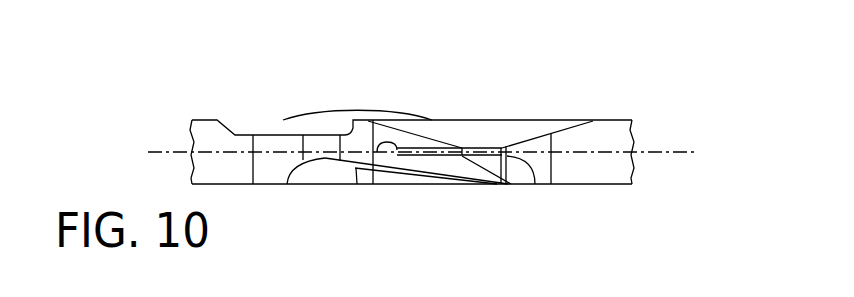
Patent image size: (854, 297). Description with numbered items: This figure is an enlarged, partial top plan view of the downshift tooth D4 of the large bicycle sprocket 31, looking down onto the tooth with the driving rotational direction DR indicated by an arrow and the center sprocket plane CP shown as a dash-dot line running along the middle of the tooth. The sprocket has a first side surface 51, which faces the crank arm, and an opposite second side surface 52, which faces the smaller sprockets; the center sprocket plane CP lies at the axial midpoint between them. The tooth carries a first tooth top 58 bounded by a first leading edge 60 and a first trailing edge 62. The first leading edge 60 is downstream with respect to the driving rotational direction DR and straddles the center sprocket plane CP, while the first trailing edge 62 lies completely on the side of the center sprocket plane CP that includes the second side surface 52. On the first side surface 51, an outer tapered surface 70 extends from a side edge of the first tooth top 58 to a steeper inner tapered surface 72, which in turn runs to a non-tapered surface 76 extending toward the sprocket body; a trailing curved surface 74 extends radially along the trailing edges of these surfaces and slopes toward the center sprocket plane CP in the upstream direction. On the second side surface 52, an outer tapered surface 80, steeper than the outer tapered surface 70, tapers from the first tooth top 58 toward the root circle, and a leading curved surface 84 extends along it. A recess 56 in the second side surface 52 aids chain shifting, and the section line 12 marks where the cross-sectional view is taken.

The section line 12 is at (442, 60).
The large bicycle sprocket 31 is at (280, 185).
The first side surface 51 is at (590, 185).
The second side surface 52 is at (553, 132).
The recess 56 is at (283, 119).
The first tooth top 58 is at (432, 140).
The first leading edge 60 is at (534, 185).
The first trailing edge 62 is at (377, 186).
The outer tapered surface 70 is at (425, 160).
The inner tapered surface 72 is at (438, 172).
The trailing curved surface 74 is at (323, 172).
The non-tapered surface 76 is at (494, 185).
The outer tapered surface 80 is at (453, 132).
The leading curved surface 84 is at (515, 132).
The downshift tooth D4 is at (400, 124).
The driving rotational direction DR is at (223, 98).
The center sprocket plane CP is at (660, 152).